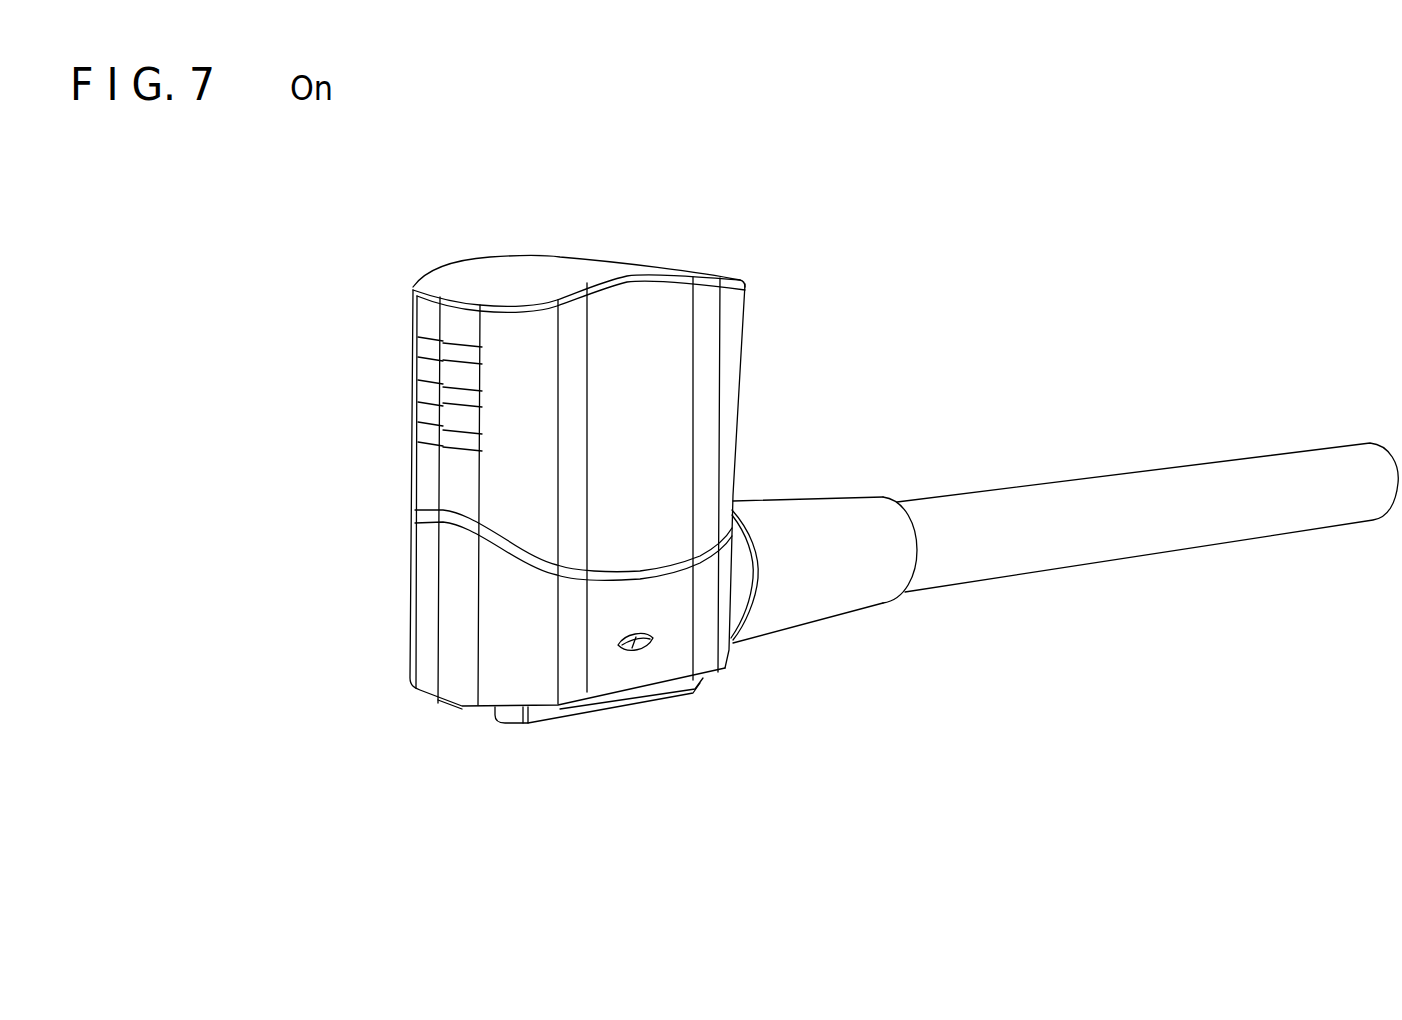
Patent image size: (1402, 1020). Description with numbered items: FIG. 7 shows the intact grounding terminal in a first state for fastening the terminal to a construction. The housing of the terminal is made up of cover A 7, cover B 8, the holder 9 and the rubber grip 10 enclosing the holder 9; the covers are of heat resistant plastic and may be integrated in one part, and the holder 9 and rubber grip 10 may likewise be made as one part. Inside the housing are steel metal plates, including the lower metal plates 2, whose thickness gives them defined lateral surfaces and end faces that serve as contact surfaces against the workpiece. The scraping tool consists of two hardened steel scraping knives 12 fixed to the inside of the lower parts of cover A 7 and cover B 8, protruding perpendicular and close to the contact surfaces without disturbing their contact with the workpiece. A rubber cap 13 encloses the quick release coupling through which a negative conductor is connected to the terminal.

The lower metal plate 2 is at (538, 725).
The cover A 7 is at (405, 600).
The cover B 8 is at (733, 667).
The holder 9 is at (683, 320).
The rubber grip 10 is at (413, 288).
The scraping knives 12 is at (700, 683).
The rubber cap 13 is at (880, 605).